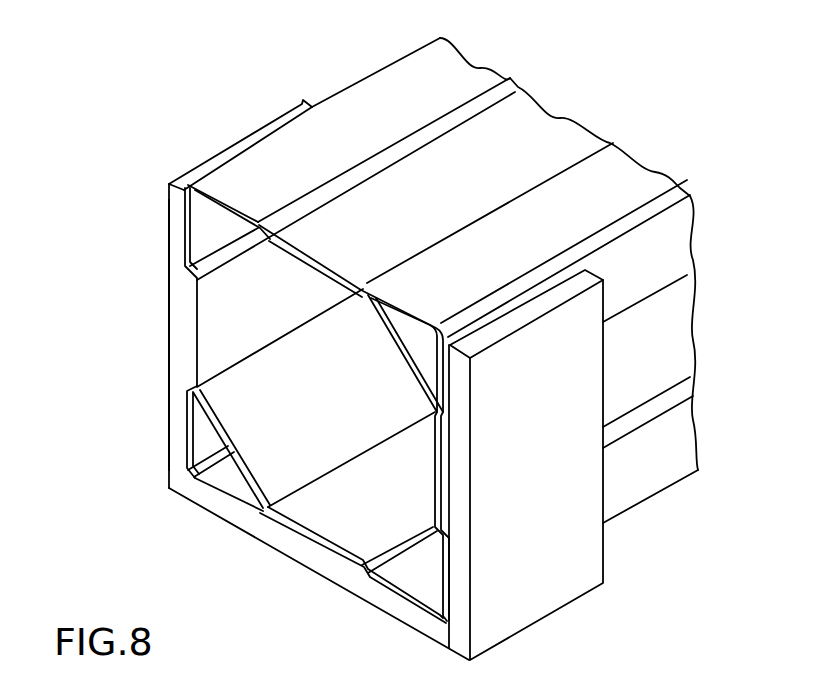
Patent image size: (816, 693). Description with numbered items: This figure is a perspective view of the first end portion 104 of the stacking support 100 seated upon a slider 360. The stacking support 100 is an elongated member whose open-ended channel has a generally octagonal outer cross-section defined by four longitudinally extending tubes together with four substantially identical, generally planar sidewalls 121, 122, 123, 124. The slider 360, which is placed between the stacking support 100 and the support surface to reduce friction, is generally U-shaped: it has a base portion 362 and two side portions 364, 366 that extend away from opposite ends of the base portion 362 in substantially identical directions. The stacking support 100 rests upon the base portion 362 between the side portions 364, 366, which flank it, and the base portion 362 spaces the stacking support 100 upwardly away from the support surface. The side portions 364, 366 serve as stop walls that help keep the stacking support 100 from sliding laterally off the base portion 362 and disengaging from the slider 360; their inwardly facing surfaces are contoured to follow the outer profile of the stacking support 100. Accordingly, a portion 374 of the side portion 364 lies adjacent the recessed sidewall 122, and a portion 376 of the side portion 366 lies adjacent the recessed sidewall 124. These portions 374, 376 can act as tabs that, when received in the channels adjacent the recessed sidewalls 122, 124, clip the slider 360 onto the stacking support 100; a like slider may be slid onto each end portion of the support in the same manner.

The stacking support 100 is at (332, 100).
The slider 360 is at (238, 143).
The sidewall 121 is at (533, 138).
The sidewall 124 is at (218, 318).
The first end portion 104 is at (193, 328).
The portion of side portion 366 376 is at (183, 348).
The side portion 366 is at (170, 438).
The sidewall 123 is at (343, 507).
The base portion 362 is at (320, 577).
The sidewall 122 is at (430, 472).
The portion of side portion 364 374 is at (450, 483).
The side portion 364 is at (557, 575).